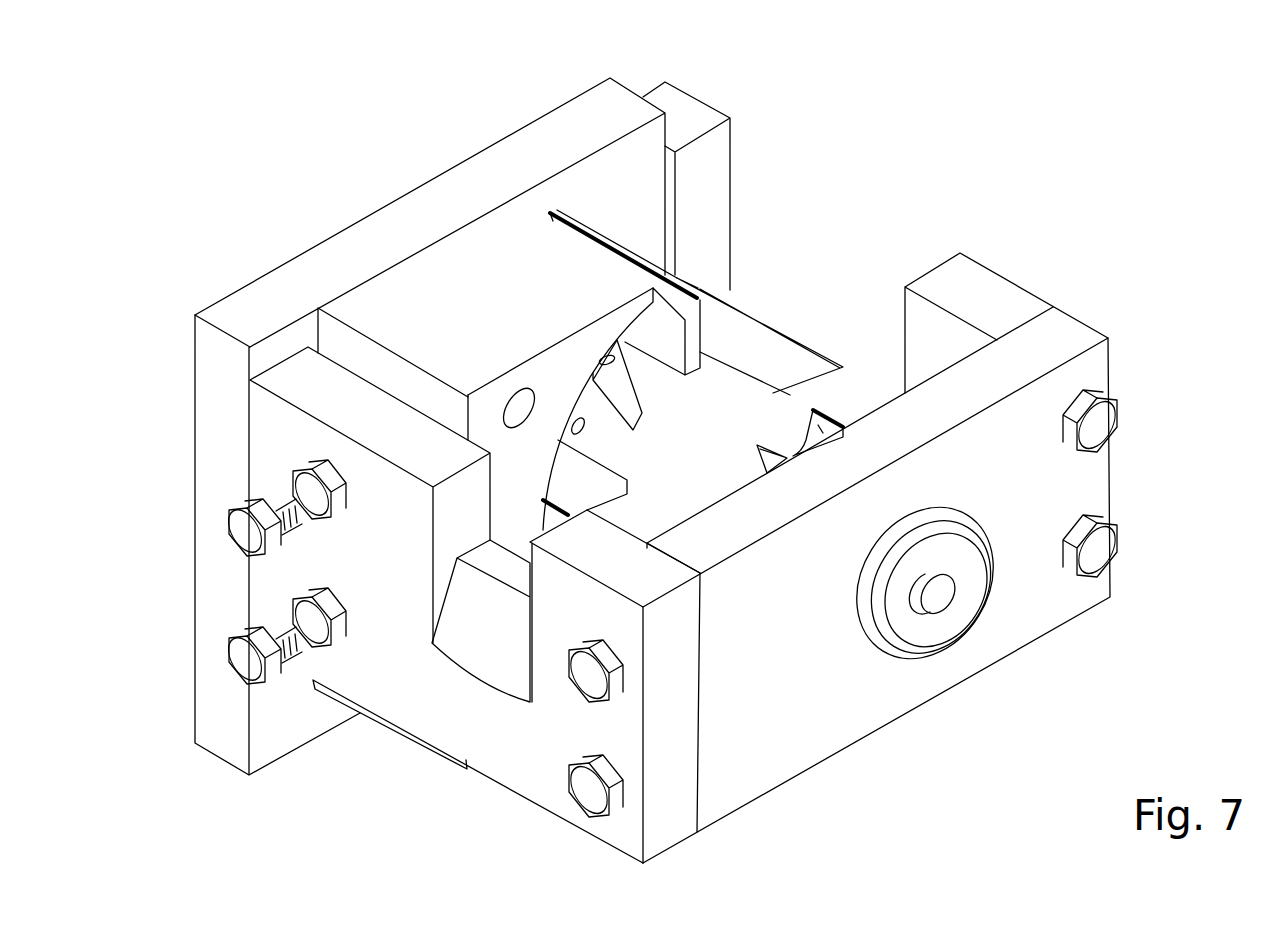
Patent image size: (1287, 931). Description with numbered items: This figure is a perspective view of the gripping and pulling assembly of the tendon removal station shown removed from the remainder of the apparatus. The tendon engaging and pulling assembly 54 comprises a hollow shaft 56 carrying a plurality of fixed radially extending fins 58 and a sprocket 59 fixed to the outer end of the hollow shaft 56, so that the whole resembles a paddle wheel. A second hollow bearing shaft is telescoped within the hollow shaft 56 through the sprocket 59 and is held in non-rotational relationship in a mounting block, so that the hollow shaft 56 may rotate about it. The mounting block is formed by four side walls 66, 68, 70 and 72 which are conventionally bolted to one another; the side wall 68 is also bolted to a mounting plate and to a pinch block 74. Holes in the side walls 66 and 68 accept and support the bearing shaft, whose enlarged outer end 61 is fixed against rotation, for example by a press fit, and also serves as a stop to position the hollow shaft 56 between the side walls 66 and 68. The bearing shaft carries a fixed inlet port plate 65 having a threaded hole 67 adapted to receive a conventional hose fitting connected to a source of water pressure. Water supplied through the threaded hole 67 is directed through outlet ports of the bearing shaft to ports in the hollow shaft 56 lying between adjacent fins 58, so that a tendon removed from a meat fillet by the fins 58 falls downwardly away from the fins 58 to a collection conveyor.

The tendon engaging and pulling assembly 54 is at (312, 172).
The hollow shaft 56 is at (735, 425).
The fins 58 is at (713, 312).
The sprocket 59 is at (815, 428).
The enlarged outer end 61 is at (865, 627).
The inlet port plate 65 is at (965, 577).
The side wall 66 is at (1087, 474).
The threaded hole 67 is at (943, 594).
The side wall 68 is at (212, 423).
The side wall 70 is at (1003, 303).
The side wall 72 is at (457, 715).
The pinch block 74 is at (372, 306).